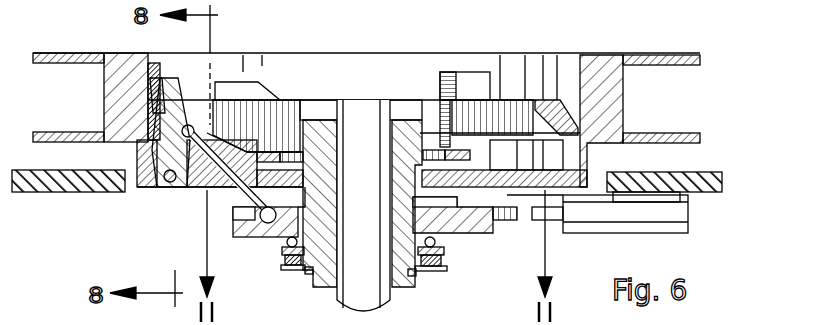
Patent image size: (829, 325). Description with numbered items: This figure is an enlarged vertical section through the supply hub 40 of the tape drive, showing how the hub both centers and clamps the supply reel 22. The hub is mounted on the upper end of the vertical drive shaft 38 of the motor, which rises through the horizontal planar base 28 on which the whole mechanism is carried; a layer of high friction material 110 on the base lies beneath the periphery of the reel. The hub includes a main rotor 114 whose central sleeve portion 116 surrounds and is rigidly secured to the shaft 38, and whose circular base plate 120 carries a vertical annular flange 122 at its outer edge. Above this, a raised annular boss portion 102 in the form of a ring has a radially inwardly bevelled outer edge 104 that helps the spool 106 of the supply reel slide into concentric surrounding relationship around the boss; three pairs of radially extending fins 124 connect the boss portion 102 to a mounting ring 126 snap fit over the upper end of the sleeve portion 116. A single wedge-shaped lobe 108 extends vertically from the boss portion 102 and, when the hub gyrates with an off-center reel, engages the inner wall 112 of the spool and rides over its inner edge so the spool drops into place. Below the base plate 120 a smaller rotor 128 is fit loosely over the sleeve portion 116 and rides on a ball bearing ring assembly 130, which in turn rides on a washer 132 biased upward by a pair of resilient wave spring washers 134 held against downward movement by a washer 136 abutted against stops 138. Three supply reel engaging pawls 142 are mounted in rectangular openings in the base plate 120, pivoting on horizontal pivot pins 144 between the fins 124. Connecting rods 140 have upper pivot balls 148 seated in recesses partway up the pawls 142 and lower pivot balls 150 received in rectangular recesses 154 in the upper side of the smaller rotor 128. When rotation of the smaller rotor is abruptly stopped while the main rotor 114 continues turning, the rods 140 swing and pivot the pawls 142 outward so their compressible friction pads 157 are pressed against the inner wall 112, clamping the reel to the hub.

The supply reel 22 is at (680, 55).
The base 28 is at (63, 195).
The drive shaft 38 is at (356, 130).
The supply hub 40 is at (410, 86).
The annular boss portion 102 is at (538, 52).
The bevelled outer edge 104 is at (600, 65).
The spool 106 is at (620, 105).
The wedge-shaped lobe 108 is at (243, 84).
The friction layer 110 is at (678, 173).
The inner wall 112 is at (568, 110).
The main rotor 114 is at (138, 160).
The sleeve portion 116 is at (397, 283).
The base plate 120 is at (478, 173).
The annular flange 122 is at (580, 162).
The fins 124 is at (260, 112).
The mounting ring 126 is at (308, 140).
The smaller rotor 128 is at (258, 238).
The ball bearing ring assembly 130 is at (288, 240).
The washer 132 is at (446, 248).
The wave spring washers 134 is at (300, 271).
The washer 136 is at (443, 263).
The stops 138 is at (422, 272).
The connecting rods 140 is at (197, 188).
The pawls 142 is at (187, 124).
The pivot pins 144 is at (163, 182).
The upper pivot balls 148 is at (186, 122).
The lower pivot balls 150 is at (282, 210).
The recesses 154 is at (236, 215).
The friction pads 157 is at (150, 95).